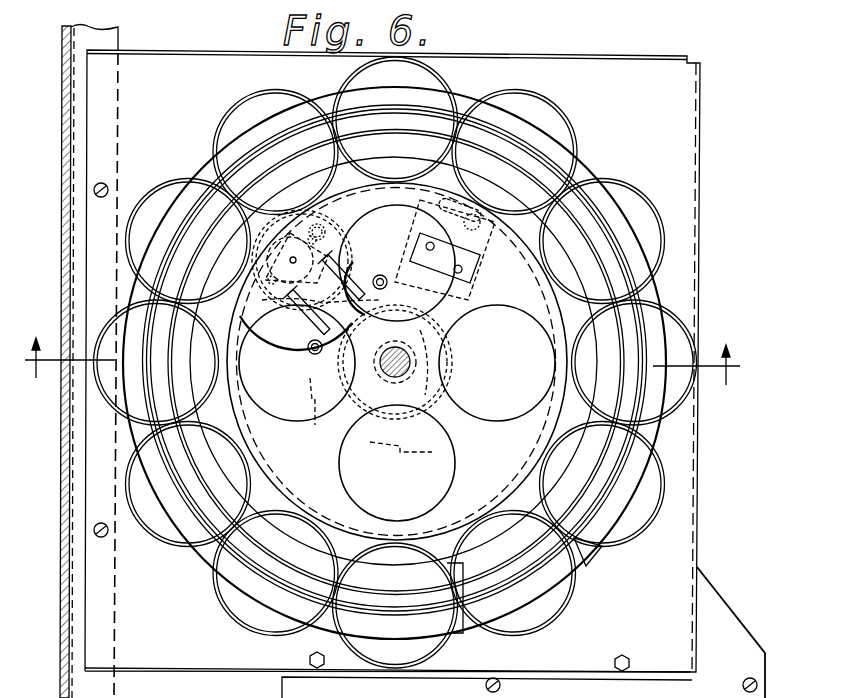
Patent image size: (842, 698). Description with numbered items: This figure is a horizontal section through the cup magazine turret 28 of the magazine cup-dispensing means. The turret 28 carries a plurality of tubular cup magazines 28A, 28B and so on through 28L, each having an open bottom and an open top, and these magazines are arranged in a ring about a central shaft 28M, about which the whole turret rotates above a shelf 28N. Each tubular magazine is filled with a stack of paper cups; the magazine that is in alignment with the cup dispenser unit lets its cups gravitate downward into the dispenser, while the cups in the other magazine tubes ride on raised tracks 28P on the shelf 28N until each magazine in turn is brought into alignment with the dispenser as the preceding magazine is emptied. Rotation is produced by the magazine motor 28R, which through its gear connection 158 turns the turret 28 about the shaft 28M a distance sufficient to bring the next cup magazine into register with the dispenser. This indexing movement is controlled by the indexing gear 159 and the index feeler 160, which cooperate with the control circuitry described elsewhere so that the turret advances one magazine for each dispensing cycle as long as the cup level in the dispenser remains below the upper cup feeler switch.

The magazine turret 28 is at (665, 171).
The tubular cup magazine 28A is at (575, 601).
The tubular cup magazine 28B is at (439, 648).
The tubular cup magazine 28L is at (647, 530).
The central shaft 28M is at (405, 372).
The shelf 28N is at (700, 263).
The raised tracks 28P is at (610, 452).
The magazine motor 28R is at (358, 268).
The gear connection 158 is at (310, 378).
The indexing gear 159 is at (447, 433).
The index feeler 160 is at (466, 301).